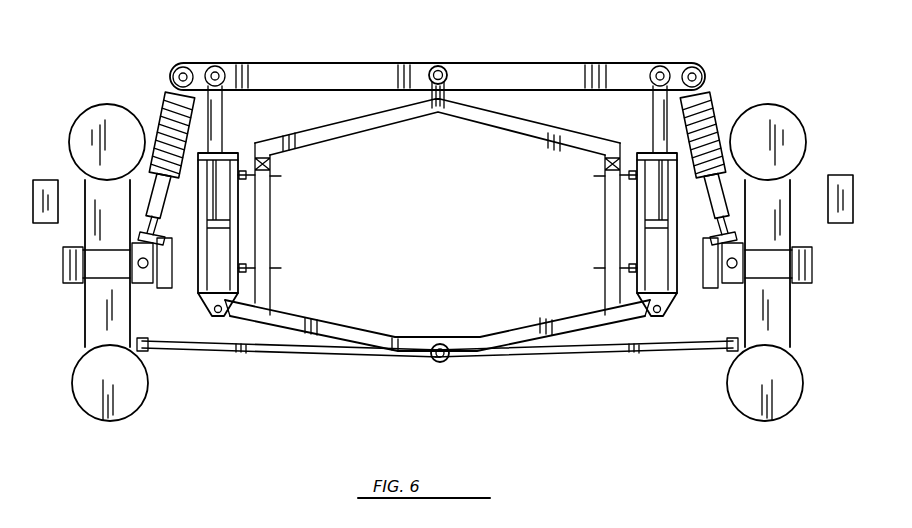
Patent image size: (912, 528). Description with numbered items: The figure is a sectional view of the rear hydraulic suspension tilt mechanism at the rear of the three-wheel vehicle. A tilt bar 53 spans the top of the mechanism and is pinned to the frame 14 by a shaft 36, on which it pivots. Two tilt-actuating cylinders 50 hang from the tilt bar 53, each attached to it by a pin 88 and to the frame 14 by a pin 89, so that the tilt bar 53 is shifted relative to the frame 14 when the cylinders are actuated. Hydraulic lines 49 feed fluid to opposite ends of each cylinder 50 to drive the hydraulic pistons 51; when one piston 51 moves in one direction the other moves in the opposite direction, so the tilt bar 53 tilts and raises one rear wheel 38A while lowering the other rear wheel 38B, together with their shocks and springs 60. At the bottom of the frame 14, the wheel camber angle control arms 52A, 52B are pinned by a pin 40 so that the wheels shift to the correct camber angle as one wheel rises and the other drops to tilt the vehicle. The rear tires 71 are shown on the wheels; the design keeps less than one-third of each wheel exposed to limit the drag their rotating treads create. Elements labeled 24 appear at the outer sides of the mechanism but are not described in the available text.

The frame 14 is at (400, 120).
The tail wheel / outrigger 24 is at (47, 180).
The shaft 36 is at (445, 68).
The rear wheel 38A is at (783, 323).
The rear wheel 38B is at (115, 330).
The pin 40 is at (444, 360).
The hydraulic lines 49 is at (280, 178).
The tilt-actuating cylinder 50 is at (223, 273).
The hydraulic piston 51 is at (230, 235).
The wheel camber angle control arm 52A is at (282, 352).
The wheel camber angle control arm 52B is at (575, 352).
The tilt bar 53 is at (545, 64).
The shocks and springs 60 is at (165, 110).
The tire 71 is at (130, 396).
The pin 88 is at (215, 66).
The pin 89 is at (211, 316).